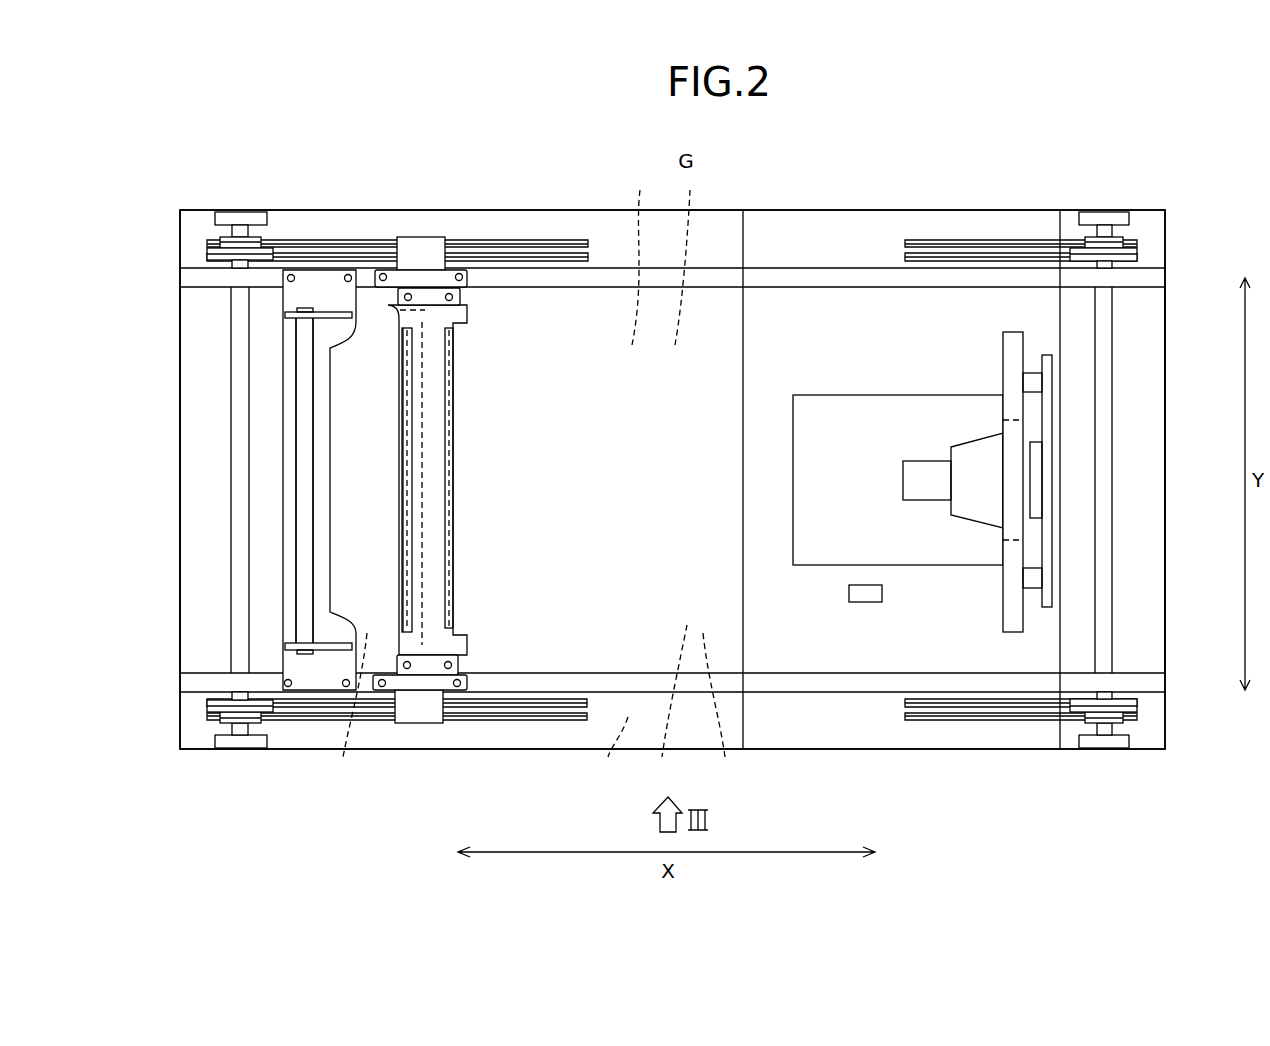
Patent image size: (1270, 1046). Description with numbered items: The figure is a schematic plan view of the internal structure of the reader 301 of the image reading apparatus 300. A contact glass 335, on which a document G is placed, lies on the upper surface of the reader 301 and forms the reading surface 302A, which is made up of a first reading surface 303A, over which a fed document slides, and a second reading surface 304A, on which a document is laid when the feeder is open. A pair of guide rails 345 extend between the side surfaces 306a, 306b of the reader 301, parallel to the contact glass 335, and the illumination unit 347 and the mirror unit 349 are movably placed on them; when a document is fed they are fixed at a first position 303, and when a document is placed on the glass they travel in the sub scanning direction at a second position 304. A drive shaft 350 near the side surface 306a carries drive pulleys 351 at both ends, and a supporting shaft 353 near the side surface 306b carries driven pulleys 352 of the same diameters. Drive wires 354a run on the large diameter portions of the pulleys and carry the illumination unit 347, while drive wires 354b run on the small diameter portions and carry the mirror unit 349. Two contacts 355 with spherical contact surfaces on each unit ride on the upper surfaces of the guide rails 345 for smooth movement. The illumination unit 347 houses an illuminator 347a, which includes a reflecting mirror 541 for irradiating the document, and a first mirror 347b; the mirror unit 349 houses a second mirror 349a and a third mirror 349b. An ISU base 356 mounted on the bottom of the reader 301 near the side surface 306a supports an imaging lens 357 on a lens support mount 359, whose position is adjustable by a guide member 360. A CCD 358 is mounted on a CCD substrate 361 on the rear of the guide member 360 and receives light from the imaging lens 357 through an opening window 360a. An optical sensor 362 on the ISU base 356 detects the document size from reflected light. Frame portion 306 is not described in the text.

The image reading apparatus 300 is at (1149, 179).
The reader 301 is at (1165, 222).
The reading surface 302A is at (731, 710).
The first position 303 is at (307, 733).
The first reading surface 303A is at (346, 710).
The second position 304 is at (608, 752).
The second reading surface 304A is at (662, 706).
The frame 306 is at (1043, 210).
The side surface 306a is at (1165, 512).
The side surface 306b is at (180, 447).
The contact glass 335 is at (637, 246).
The guide rails 345 is at (563, 278).
The illumination unit 347 is at (453, 510).
The illuminator 347a is at (448, 468).
The first mirror 347b is at (403, 320).
The mirror unit 349 is at (328, 550).
The second mirror 349a is at (308, 512).
The third mirror 349b is at (307, 483).
The drive shaft 350 is at (1112, 386).
The drive pulleys 351 is at (1130, 243).
The driven pulleys 352 is at (213, 244).
The supporting shaft 353 is at (232, 364).
The drive wires 354a is at (487, 240).
The drive wires 354b is at (553, 253).
The contacts 355 is at (385, 238).
The ISU base 356 is at (745, 399).
The imaging lens 357 is at (916, 465).
The CCD 358 is at (1040, 465).
The lens support mount 359 is at (841, 395).
The guide member 360 is at (1000, 595).
The opening window 360a is at (1010, 430).
The CCD substrate 361 is at (1048, 422).
The optical sensor 362 is at (865, 602).
The reflecting mirror 541 is at (400, 403).